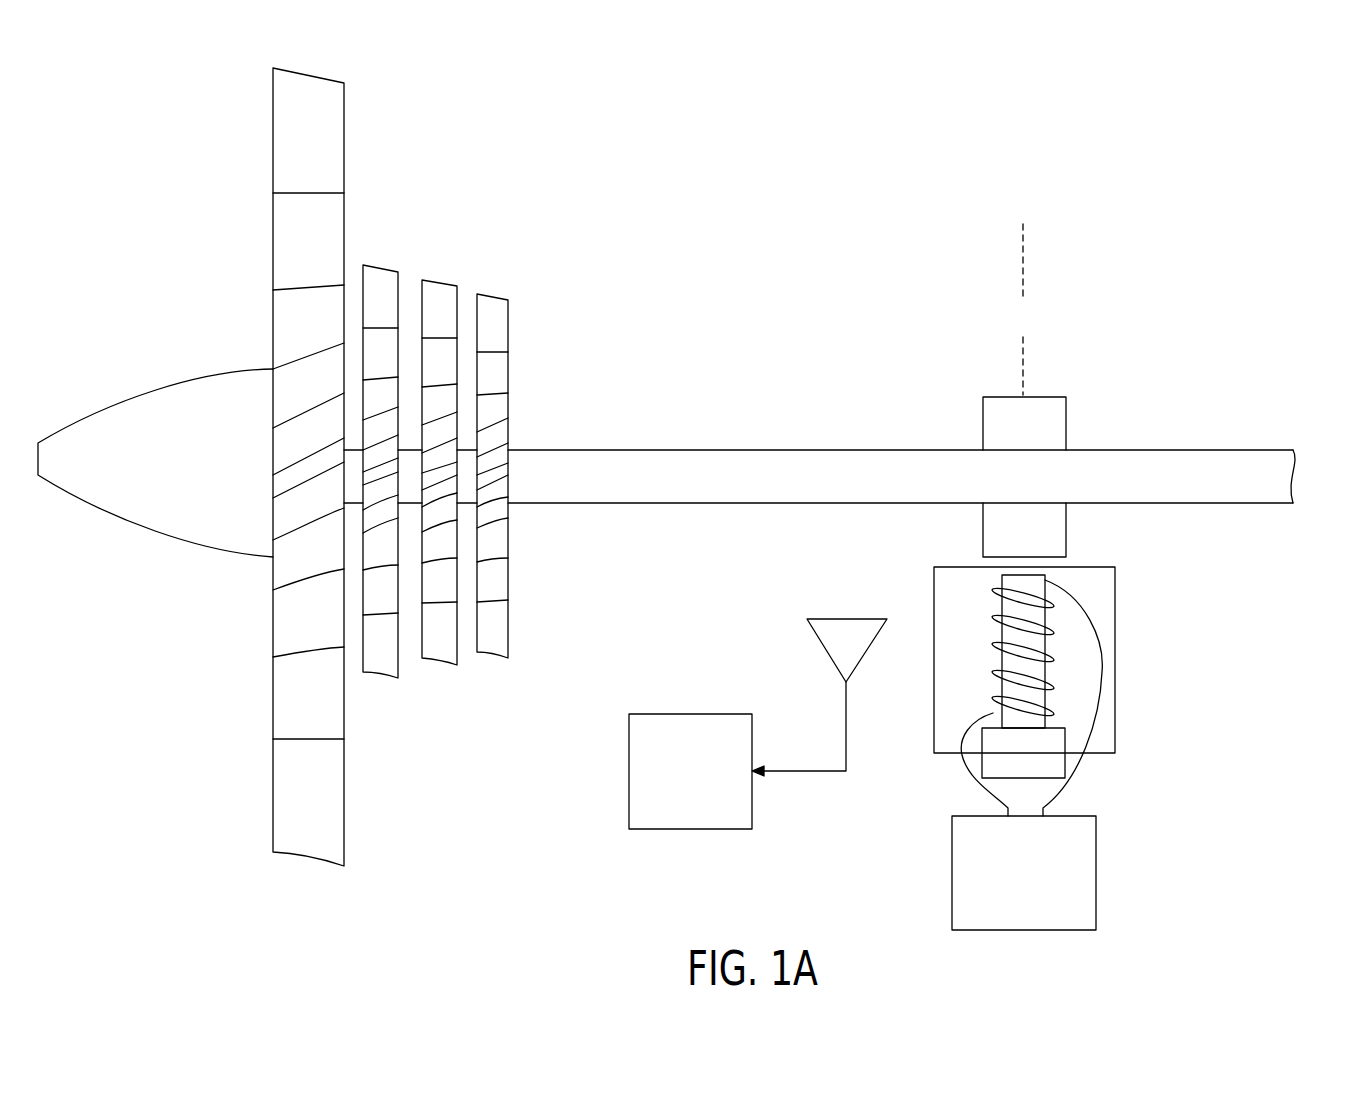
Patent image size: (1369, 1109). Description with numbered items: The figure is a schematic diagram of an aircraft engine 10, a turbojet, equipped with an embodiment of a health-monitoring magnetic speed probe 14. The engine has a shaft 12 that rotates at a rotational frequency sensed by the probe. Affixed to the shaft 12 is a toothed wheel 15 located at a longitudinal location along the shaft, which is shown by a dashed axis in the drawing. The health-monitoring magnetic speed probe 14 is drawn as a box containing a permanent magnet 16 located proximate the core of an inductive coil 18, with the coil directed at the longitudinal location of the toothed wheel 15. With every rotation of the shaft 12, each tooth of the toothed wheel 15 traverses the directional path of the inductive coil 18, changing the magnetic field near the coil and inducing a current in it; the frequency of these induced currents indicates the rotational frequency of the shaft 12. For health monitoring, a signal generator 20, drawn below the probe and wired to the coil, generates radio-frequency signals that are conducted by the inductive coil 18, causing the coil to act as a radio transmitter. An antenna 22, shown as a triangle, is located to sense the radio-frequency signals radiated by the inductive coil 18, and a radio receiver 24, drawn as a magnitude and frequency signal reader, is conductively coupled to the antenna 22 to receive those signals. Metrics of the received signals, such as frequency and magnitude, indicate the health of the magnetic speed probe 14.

The aircraft engine 10 is at (1227, 270).
The shaft 12 is at (743, 450).
The health-monitoring magnetic speed probe 14 is at (1115, 670).
The toothed wheel 15 is at (1067, 412).
The permanent magnet 16 is at (982, 740).
The inductive coil 18 is at (996, 617).
The signal generator 20 is at (952, 877).
The antenna 22 is at (826, 649).
The radio receiver 24 is at (687, 714).